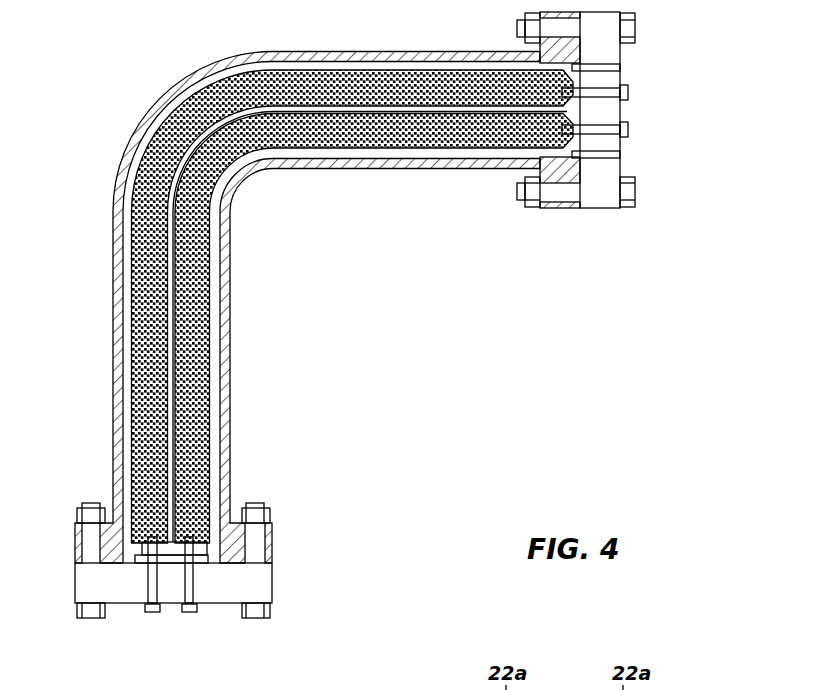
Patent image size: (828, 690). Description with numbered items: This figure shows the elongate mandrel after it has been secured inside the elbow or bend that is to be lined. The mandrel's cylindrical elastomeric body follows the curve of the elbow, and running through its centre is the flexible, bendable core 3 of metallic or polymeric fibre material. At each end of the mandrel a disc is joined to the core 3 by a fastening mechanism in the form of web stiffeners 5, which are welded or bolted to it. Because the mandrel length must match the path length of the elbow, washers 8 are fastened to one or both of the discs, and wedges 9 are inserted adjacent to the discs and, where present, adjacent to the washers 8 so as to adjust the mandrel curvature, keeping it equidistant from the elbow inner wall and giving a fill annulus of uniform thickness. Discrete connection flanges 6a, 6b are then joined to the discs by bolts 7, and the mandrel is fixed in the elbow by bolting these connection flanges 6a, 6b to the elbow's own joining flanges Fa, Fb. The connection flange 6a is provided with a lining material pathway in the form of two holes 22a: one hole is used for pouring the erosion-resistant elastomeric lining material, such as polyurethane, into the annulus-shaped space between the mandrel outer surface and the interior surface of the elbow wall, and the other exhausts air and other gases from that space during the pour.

The core 3 is at (177, 395).
The web stiffeners 5 is at (229, 492).
The connection flange 6a is at (602, 232).
The connection flange 6b is at (292, 583).
The bolts 7 is at (188, 612).
The washers 8 is at (200, 563).
The wedges 9 is at (573, 78).
The holes 22a is at (620, 63).
The joining flange Fa is at (562, 232).
The joining flange Fb is at (292, 542).